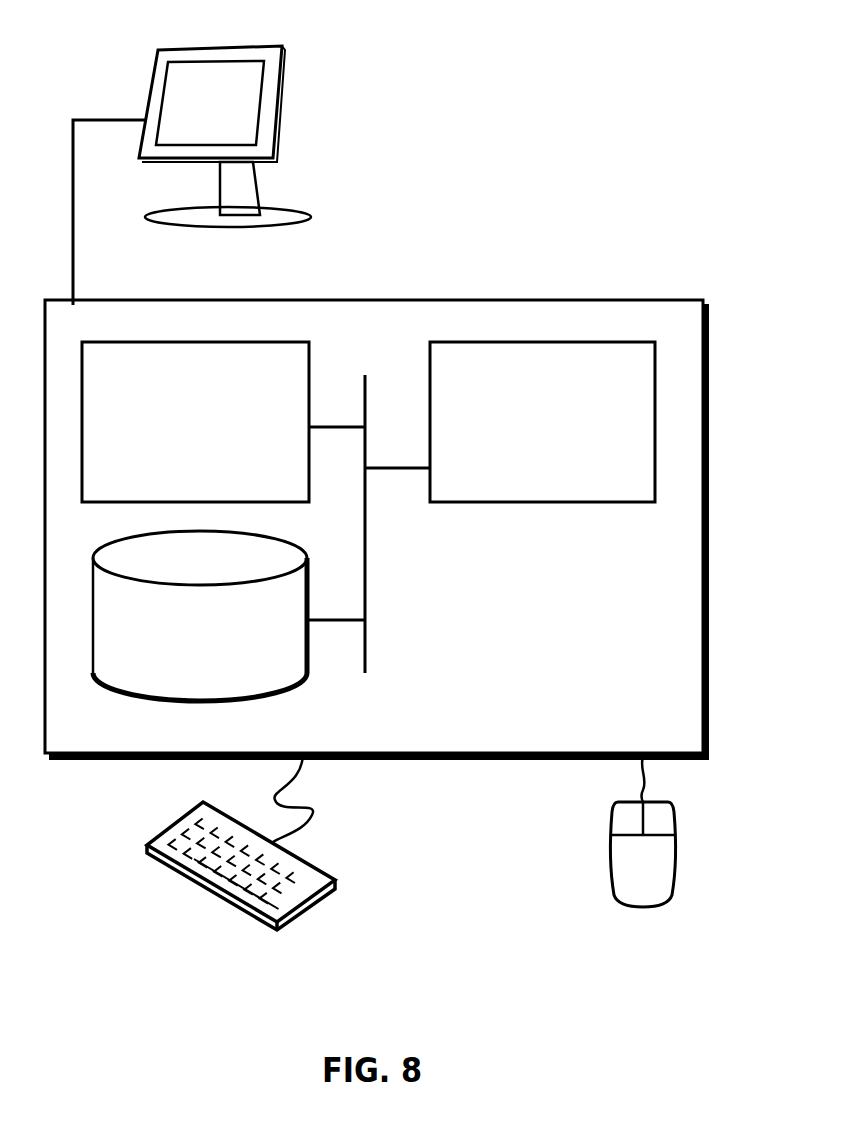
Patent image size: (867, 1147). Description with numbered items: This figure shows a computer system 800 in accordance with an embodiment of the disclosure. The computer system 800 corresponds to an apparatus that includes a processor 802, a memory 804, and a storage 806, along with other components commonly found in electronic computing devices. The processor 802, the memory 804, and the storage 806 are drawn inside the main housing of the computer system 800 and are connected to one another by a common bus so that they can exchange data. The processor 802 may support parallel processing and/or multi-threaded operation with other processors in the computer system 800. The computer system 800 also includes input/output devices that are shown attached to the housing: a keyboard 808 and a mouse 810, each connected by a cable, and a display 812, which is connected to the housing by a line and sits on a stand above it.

The computer system 800 is at (419, 278).
The processor 802 is at (525, 436).
The memory 804 is at (177, 433).
The storage device 806 is at (183, 646).
The keyboard 808 is at (165, 860).
The mouse 810 is at (623, 875).
The display monitor 812 is at (192, 175).